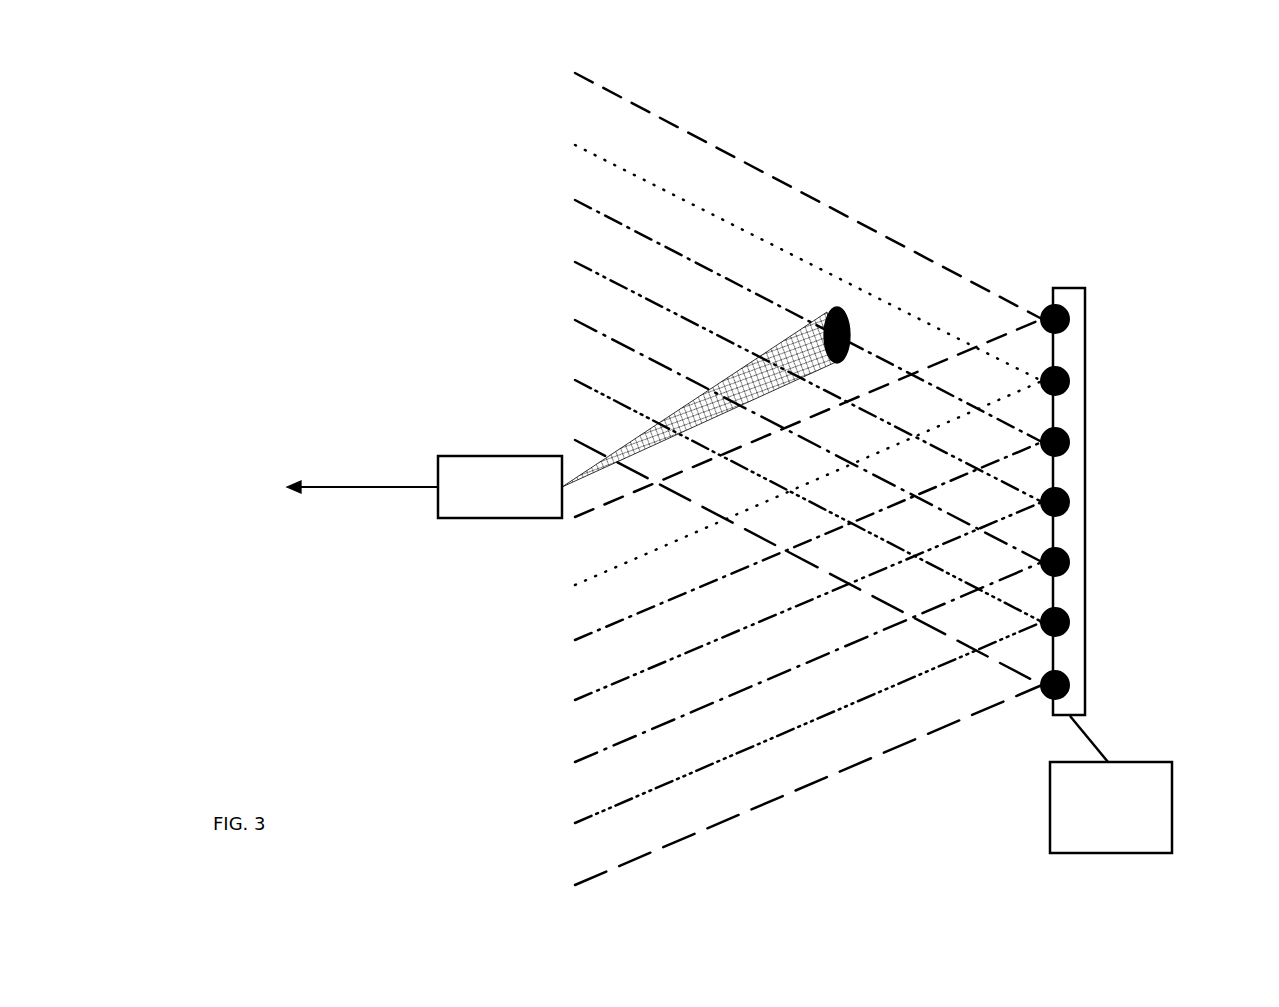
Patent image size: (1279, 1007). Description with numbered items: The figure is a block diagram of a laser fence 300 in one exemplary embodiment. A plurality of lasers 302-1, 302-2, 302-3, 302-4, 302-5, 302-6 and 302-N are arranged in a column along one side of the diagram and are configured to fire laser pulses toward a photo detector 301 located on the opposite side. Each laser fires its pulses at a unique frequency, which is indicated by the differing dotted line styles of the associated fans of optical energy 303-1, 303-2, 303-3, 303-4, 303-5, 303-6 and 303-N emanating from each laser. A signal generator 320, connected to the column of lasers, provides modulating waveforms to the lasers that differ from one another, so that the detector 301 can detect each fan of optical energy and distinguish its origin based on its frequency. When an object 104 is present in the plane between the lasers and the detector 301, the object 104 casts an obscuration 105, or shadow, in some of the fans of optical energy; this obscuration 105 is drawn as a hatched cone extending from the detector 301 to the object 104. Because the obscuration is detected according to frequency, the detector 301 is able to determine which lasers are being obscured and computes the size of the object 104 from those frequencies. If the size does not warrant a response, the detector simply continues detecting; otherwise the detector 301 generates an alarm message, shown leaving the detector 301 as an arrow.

The laser fence 300 is at (350, 207).
The photo detector 301 is at (377, 487).
The object 104 is at (835, 307).
The obscuration 105 is at (807, 353).
The signal generator 320 is at (1111, 570).
The laser 302-1 is at (1068, 320).
The laser 302-2 is at (1068, 381).
The laser 302-3 is at (1068, 442).
The laser 302-4 is at (1068, 502).
The laser 302-5 is at (1068, 562).
The laser 302-6 is at (1068, 622).
The laser 302-N is at (1068, 685).
The fan of optical energy 303-1 is at (873, 225).
The fan of optical energy 303-2 is at (893, 302).
The fan of optical energy 303-3 is at (894, 362).
The fan of optical energy 303-4 is at (903, 427).
The fan of optical energy 303-5 is at (696, 647).
The fan of optical energy 303-6 is at (786, 708).
The fan of optical energy 303-N is at (884, 717).